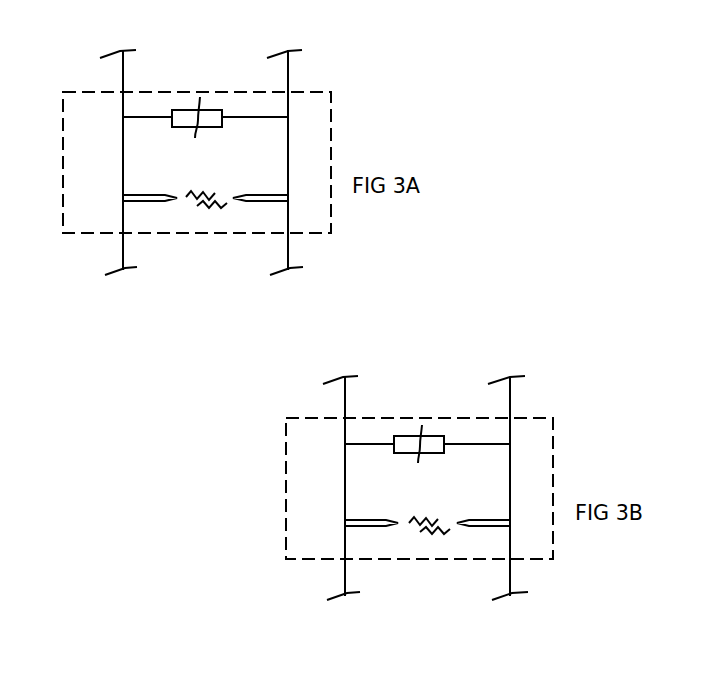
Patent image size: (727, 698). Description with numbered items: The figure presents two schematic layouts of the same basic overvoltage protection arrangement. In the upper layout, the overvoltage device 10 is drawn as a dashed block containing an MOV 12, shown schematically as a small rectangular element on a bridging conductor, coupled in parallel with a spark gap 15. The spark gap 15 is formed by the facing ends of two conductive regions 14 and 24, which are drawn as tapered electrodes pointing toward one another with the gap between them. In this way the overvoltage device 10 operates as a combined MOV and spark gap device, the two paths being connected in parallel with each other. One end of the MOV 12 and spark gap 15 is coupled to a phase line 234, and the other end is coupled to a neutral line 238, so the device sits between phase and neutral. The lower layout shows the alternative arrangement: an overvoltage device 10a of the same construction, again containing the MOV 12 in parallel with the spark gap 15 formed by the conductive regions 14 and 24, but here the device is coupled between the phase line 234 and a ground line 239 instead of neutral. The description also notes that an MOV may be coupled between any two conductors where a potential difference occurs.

In FIG. 3A, the overvoltage device 10 is at (346, 71).
In FIG. 3B, the overvoltage device 10a is at (567, 398).
In FIG. 3A, the MOV 12 is at (195, 82).
In FIG. 3B, the MOV 12 is at (418, 404).
In FIG. 3A, the conductive region 14 is at (250, 223).
In FIG. 3B, the conductive region 14 is at (472, 549).
In FIG. 3A, the spark gap 15 is at (201, 238).
In FIG. 3B, the spark gap 15 is at (423, 563).
In FIG. 3A, the conductive region 24 is at (152, 223).
In FIG. 3B, the conductive region 24 is at (375, 549).
In FIG. 3A, the phase line 234 is at (292, 252).
In FIG. 3B, the phase line 234 is at (512, 578).
In FIG. 3A, the neutral line 238 is at (122, 249).
In FIG. 3B, the ground line 239 is at (345, 576).